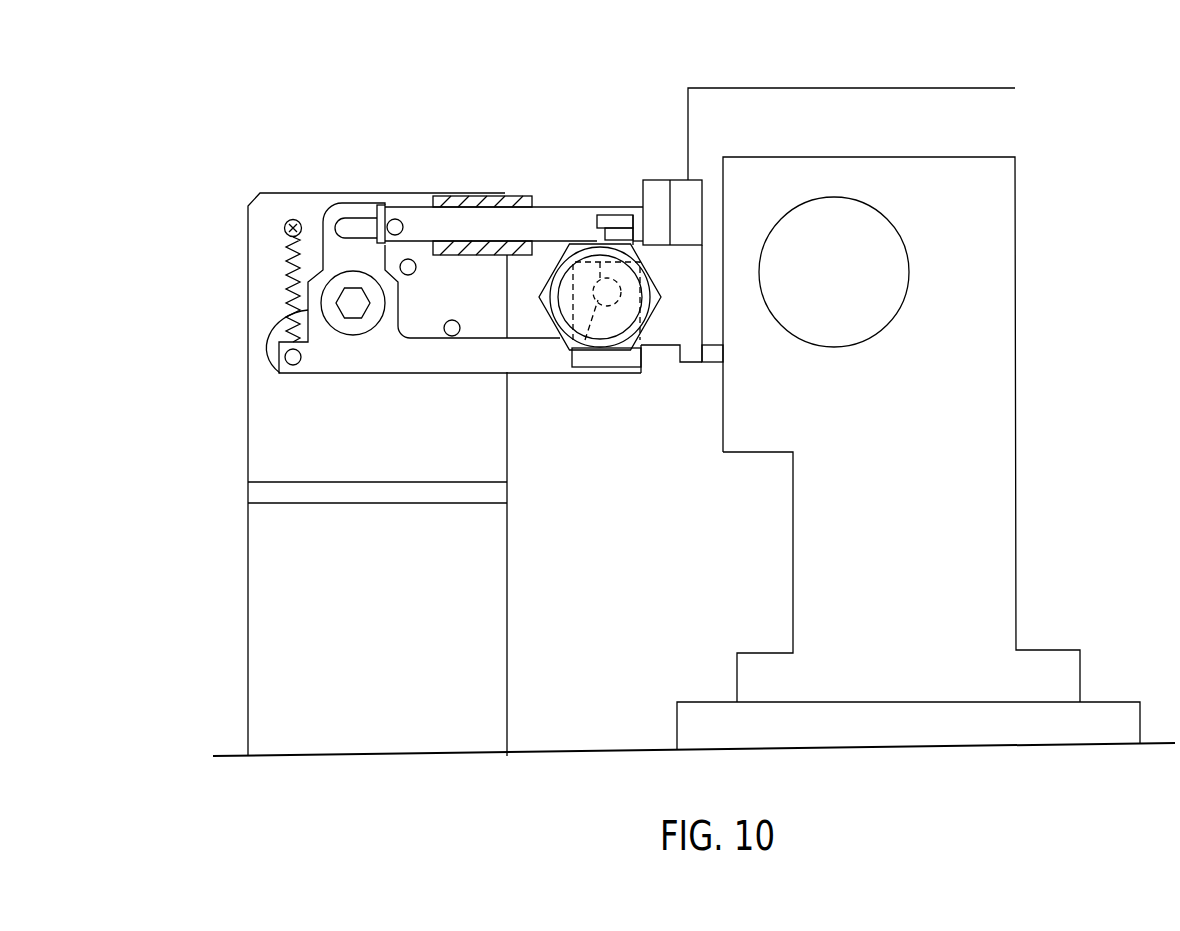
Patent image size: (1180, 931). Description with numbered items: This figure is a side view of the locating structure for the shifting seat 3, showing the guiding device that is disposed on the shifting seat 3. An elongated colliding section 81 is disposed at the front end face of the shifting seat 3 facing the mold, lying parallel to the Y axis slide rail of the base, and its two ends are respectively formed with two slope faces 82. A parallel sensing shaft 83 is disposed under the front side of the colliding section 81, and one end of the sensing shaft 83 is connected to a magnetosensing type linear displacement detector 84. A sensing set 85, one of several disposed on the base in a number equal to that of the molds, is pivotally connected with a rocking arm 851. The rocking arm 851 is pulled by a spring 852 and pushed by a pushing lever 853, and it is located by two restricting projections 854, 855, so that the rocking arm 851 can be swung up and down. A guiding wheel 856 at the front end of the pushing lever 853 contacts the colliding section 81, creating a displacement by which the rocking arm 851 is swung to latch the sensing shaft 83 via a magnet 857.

The shifting seat 3 is at (803, 97).
The colliding section 81 is at (658, 185).
The slope faces 82 is at (658, 213).
The sensing shaft 83 is at (628, 268).
The magnetosensing type linear displacement detector 84 is at (580, 330).
The sensing set 85 is at (312, 212).
The rocking arm 851 is at (456, 355).
The spring 852 is at (287, 276).
The pushing lever 853 is at (502, 215).
The restricting projection 854 is at (413, 274).
The restricting projection 855 is at (446, 334).
The guiding wheel 856 is at (615, 222).
The magnet 857 is at (612, 320).